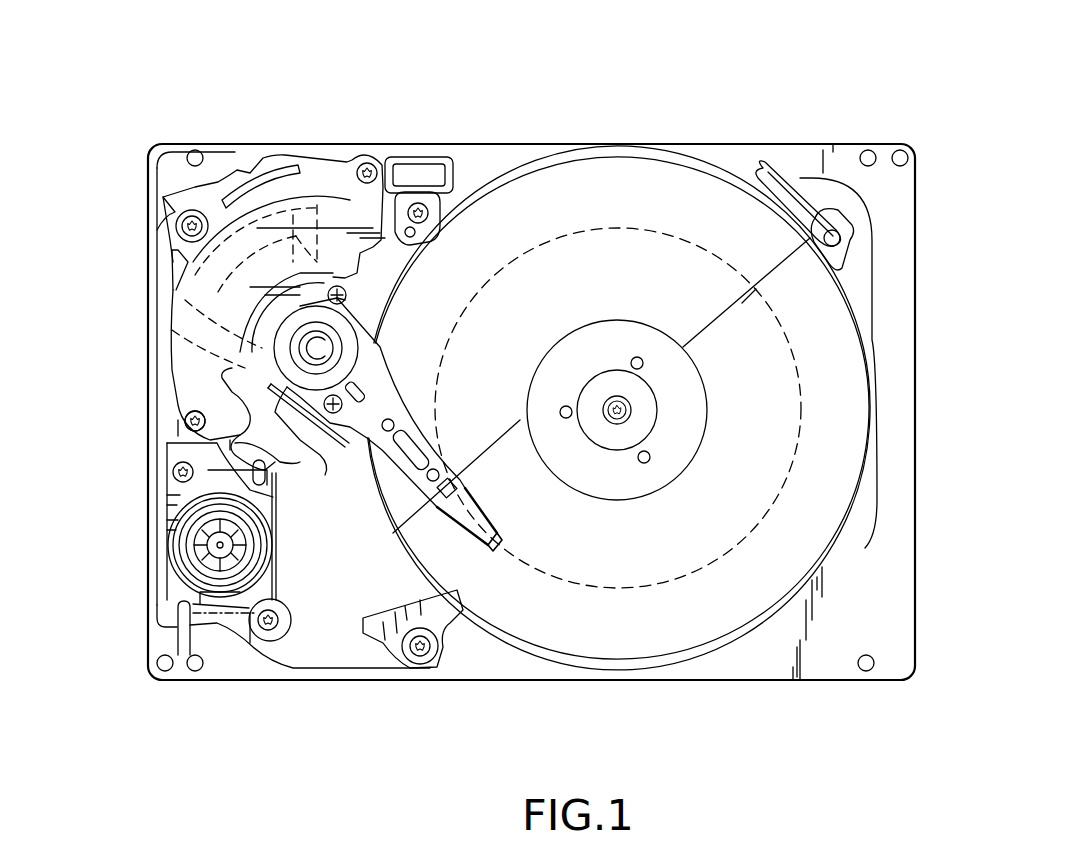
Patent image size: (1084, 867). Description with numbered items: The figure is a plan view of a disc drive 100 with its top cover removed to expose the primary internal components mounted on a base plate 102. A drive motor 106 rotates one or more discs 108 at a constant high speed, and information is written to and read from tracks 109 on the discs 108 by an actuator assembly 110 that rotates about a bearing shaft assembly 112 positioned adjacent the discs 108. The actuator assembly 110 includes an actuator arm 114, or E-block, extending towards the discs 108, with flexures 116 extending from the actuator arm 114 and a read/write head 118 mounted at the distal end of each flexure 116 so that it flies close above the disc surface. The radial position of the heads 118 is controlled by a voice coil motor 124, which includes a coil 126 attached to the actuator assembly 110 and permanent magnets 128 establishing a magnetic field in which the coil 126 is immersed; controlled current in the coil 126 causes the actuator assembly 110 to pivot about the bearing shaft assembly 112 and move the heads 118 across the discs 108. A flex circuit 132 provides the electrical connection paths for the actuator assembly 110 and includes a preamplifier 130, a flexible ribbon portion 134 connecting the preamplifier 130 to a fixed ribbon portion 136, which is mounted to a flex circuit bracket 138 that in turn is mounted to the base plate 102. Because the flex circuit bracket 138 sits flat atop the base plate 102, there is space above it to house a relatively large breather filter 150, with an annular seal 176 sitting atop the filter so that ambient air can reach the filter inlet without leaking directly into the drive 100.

The disc drive 100 is at (470, 100).
The base plate 102 is at (748, 668).
The drive motor 106 is at (598, 393).
The disc 108 is at (686, 177).
The tracks 109 is at (777, 494).
The actuator assembly 110 is at (395, 344).
The bearing shaft assembly 112 is at (325, 346).
The actuator arm 114 is at (388, 397).
The flexure 116 is at (467, 505).
The read/write head 118 is at (502, 545).
The voice coil motor 124 is at (289, 188).
The coil 126 is at (197, 290).
The permanent magnet 128 is at (192, 392).
The preamplifier 130 is at (313, 435).
The flex circuit 132 is at (362, 497).
The flexible ribbon portion 134 is at (297, 463).
The fixed ribbon portion 136 is at (212, 445).
The flex circuit bracket 138 is at (255, 600).
The breather filter 150 is at (273, 573).
The annular seal 176 is at (273, 527).